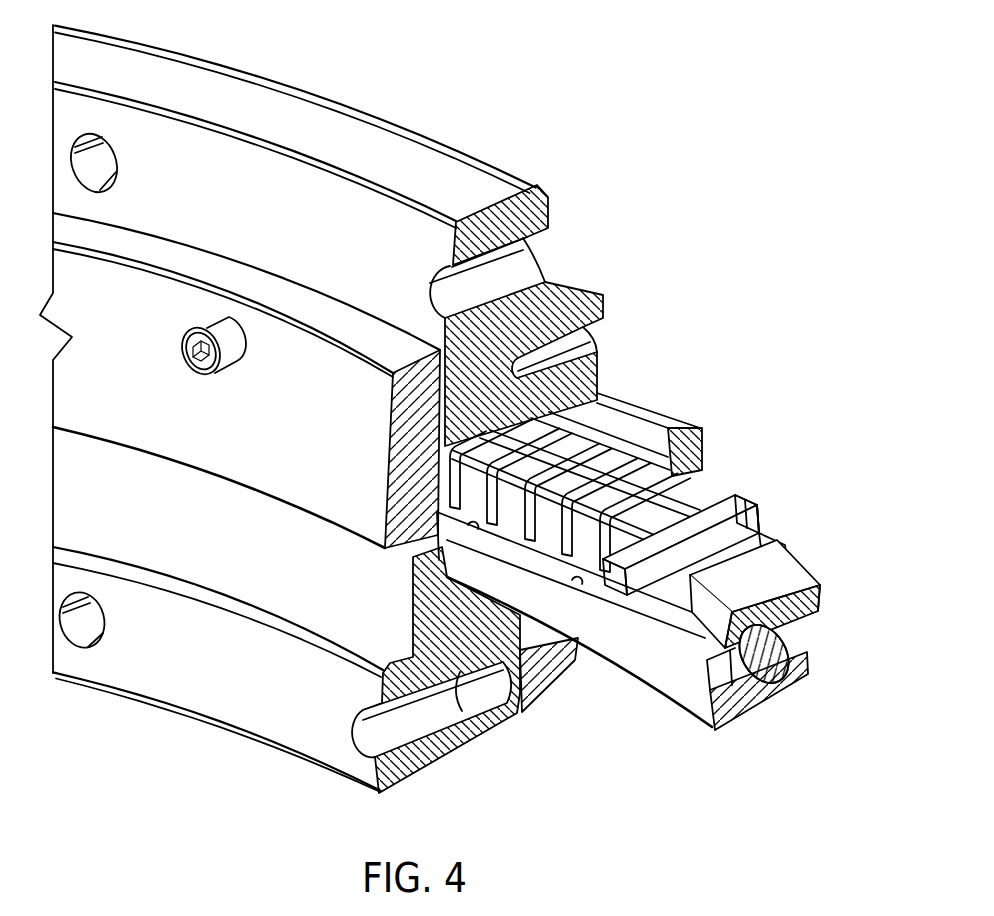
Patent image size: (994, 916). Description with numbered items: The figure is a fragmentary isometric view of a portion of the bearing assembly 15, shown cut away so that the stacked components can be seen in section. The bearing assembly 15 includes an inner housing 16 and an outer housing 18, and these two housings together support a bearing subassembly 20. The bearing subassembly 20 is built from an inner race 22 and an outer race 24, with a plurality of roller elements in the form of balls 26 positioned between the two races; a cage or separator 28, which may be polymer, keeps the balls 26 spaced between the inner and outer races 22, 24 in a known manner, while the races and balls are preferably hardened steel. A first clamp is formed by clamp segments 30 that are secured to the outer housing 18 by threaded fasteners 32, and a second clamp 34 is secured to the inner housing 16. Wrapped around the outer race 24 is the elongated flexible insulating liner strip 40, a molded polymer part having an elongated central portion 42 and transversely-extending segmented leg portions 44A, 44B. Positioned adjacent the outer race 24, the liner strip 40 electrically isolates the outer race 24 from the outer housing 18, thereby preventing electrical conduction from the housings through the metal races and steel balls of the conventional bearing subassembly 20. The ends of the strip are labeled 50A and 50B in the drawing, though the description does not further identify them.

The bearing assembly 15 is at (455, 137).
The inner housing 16 is at (463, 762).
The outer housing 18 is at (530, 186).
The bearing subassembly 20 is at (803, 563).
The inner race 22 is at (810, 672).
The outer race 24 is at (818, 600).
The balls 26 is at (797, 635).
The cage or separator 28 is at (703, 662).
The clamp segments 30 is at (105, 420).
The threaded fasteners 32 is at (192, 350).
The second clamp 34 is at (670, 410).
The flexible insulating liner strip 40 is at (735, 497).
The elongated central portion 42 is at (705, 517).
The segmented leg portion 44A is at (637, 580).
The segmented leg portion 44B is at (783, 542).
The first end 50A is at (624, 586).
The second end 50B is at (758, 522).